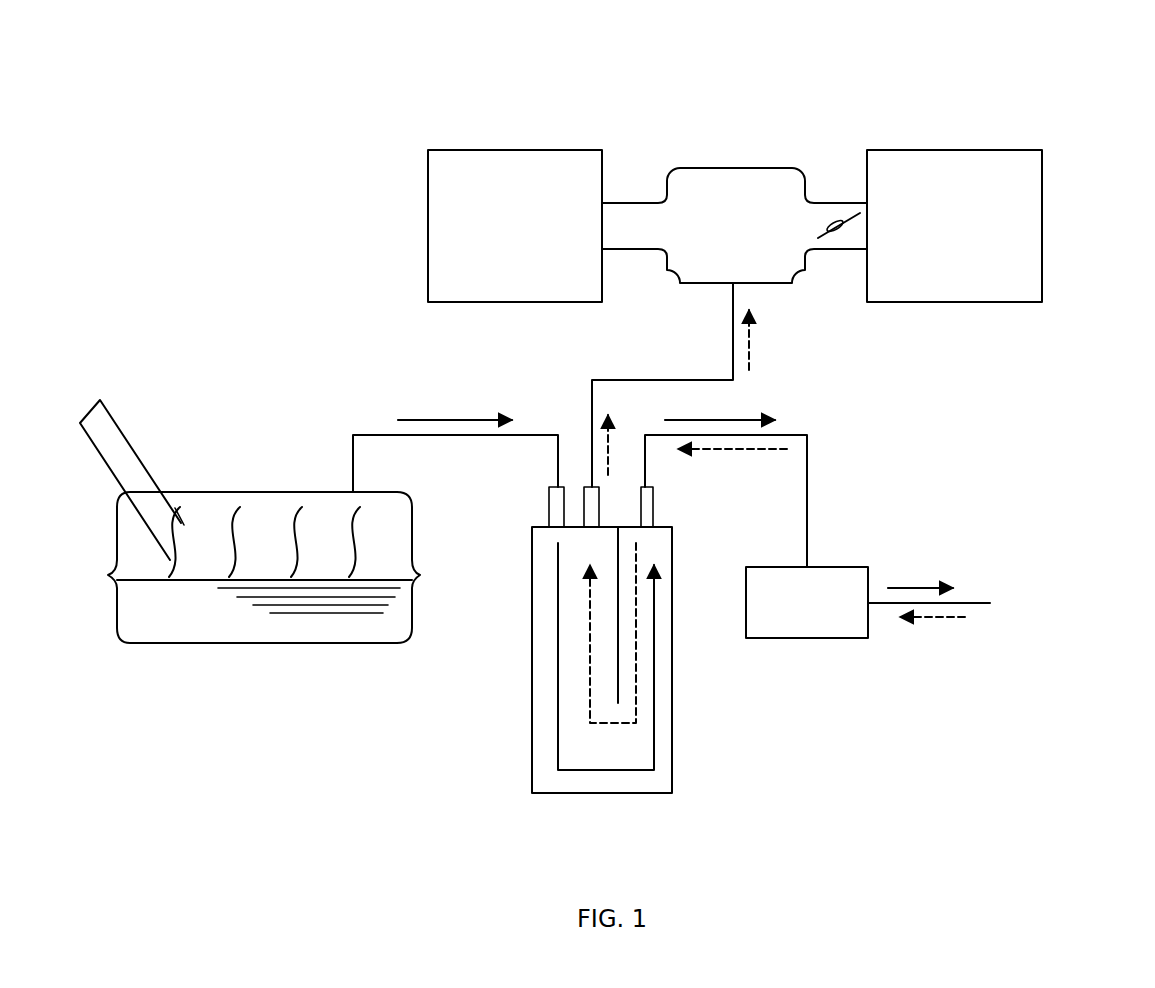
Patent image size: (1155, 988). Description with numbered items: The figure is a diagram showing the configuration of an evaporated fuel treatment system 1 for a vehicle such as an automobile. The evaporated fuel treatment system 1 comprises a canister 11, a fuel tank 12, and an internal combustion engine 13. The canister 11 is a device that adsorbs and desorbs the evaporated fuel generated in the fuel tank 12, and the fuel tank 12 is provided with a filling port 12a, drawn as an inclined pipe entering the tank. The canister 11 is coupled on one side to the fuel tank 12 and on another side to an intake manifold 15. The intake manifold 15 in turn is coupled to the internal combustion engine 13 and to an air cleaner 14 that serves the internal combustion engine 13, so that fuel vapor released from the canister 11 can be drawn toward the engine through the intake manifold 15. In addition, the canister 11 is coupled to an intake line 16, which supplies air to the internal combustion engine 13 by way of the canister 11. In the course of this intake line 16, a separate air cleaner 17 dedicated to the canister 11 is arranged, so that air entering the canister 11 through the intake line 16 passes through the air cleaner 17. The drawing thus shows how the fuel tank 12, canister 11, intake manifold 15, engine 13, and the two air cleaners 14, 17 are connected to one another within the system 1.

The evaporated fuel treatment system 1 is at (1042, 47).
The canister 11 is at (607, 793).
The fuel tank 12 is at (197, 643).
The filling port 12a is at (128, 437).
The internal combustion engine 13 is at (514, 150).
The air cleaner 14 is at (956, 150).
The intake manifold 15 is at (735, 168).
The intake line 16 is at (884, 603).
The air cleaner 17 is at (800, 638).